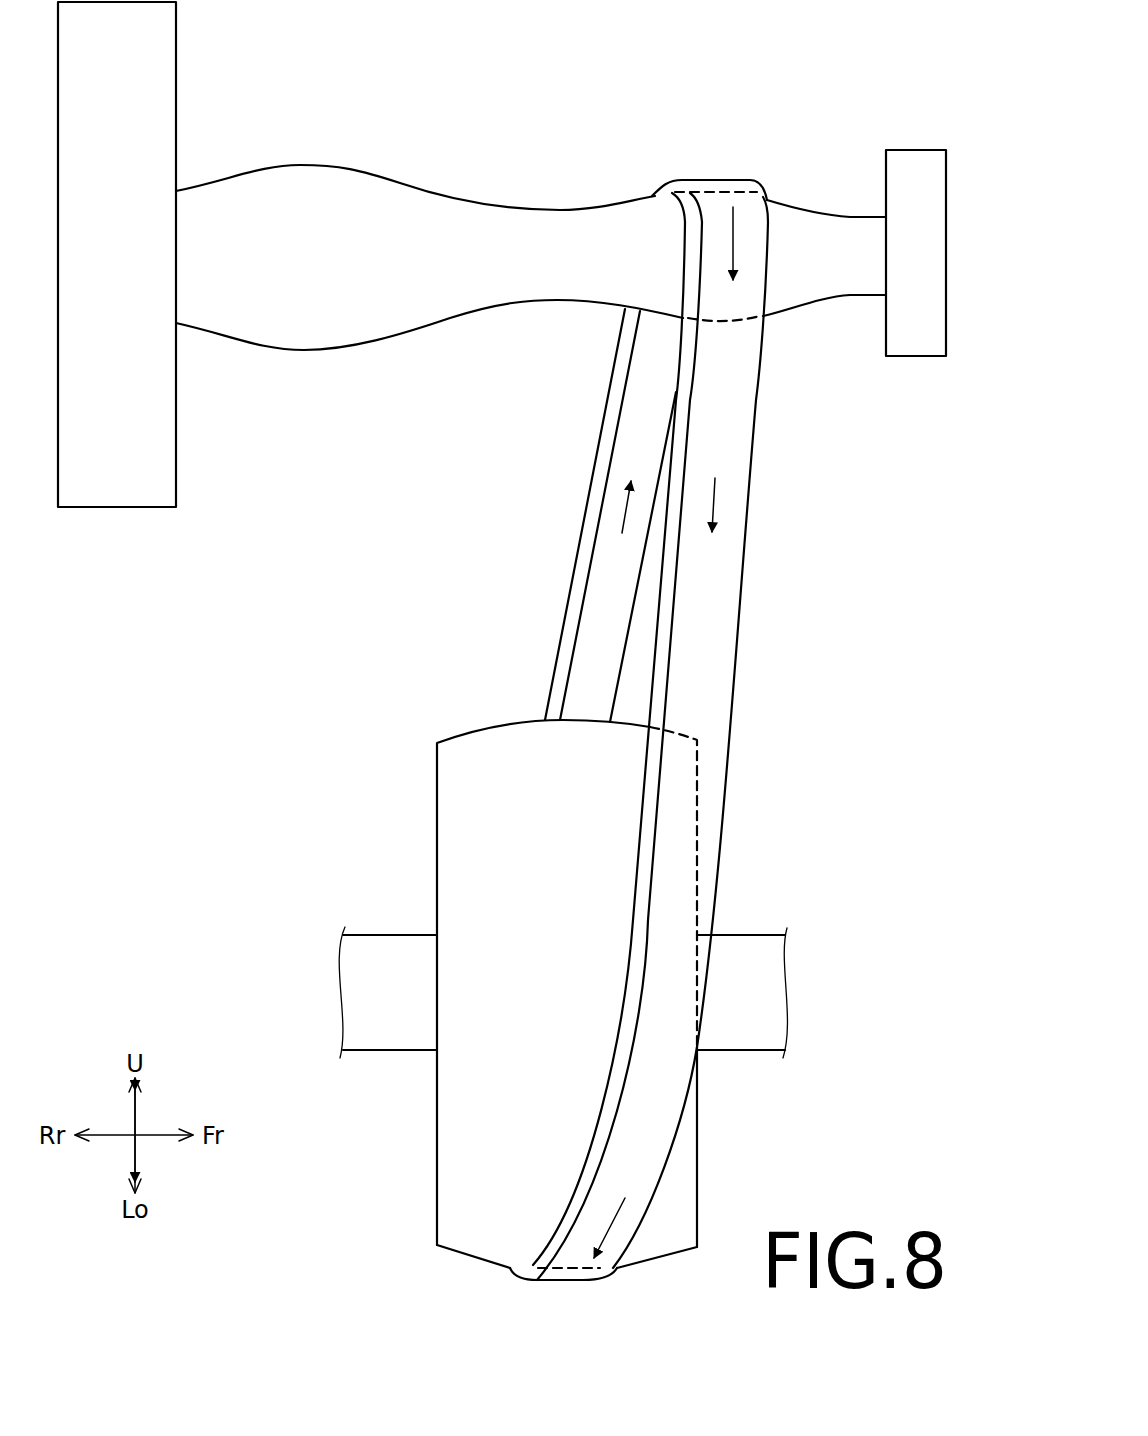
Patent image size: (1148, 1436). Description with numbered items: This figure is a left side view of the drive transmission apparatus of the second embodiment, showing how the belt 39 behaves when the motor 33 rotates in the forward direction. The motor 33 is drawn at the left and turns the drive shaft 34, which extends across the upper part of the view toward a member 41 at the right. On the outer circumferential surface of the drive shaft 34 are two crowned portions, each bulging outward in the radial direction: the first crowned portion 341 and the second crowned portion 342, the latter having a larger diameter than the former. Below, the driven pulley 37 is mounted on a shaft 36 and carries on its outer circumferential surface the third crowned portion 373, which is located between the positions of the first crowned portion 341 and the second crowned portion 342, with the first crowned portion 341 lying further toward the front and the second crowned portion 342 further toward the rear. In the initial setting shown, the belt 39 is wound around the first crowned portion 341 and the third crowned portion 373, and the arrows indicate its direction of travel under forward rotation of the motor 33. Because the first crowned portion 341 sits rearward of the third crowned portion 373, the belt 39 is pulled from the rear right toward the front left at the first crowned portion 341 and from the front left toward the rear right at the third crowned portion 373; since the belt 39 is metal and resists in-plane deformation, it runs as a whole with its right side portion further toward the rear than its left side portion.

The motor 33 is at (176, 61).
The second roller 41 is at (913, 148).
The drive shaft 34 is at (531, 216).
The second crowned portion 342 is at (316, 159).
The first crowned portion 341 is at (718, 188).
The belt 39 is at (597, 443).
The driven pulley 37 is at (527, 1014).
The third crowned portion 373 is at (510, 1268).
The rotary shaft 36 is at (373, 1050).